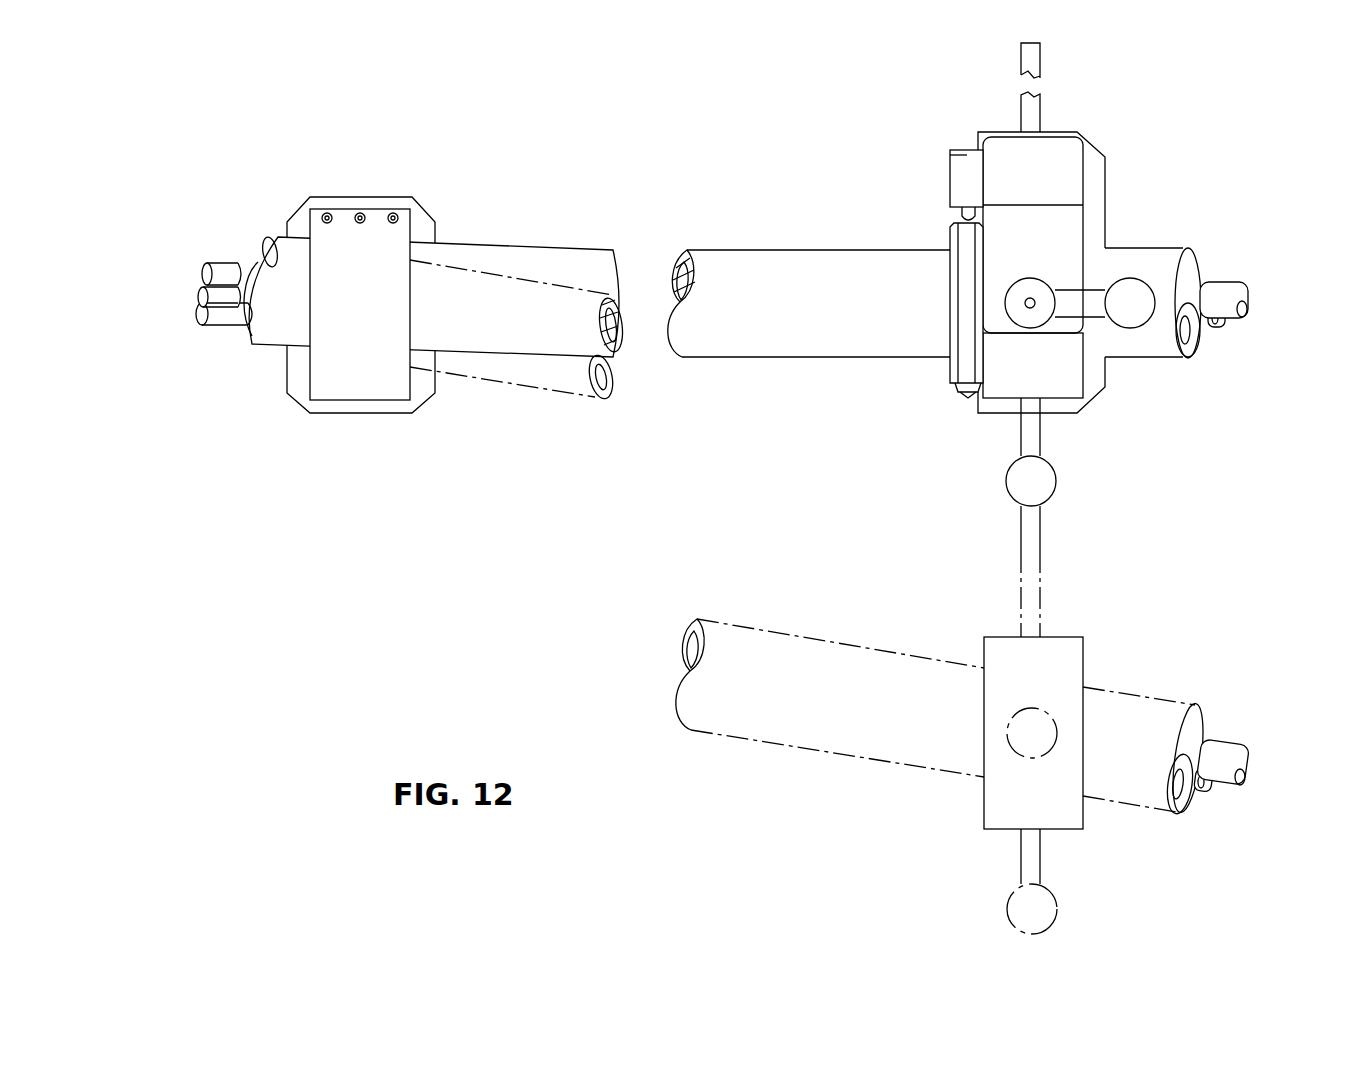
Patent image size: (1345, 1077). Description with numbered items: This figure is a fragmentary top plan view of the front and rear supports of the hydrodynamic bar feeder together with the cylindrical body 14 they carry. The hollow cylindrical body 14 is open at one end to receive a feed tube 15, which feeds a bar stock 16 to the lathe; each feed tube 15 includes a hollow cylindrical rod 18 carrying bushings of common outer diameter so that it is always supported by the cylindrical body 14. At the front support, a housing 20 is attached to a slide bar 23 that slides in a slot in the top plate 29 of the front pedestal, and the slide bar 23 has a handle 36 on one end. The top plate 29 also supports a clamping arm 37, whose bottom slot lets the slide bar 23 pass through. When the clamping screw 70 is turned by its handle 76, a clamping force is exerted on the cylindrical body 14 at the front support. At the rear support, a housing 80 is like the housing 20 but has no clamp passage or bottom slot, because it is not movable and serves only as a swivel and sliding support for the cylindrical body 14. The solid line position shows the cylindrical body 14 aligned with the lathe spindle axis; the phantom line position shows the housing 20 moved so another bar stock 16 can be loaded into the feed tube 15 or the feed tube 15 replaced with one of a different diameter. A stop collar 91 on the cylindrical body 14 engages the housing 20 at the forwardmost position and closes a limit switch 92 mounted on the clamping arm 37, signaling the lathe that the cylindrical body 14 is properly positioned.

The cylindrical body 14 is at (765, 357).
The feed tube 15 is at (1212, 278).
The bar stock 16 is at (1236, 282).
The hollow cylindrical rod 18 is at (1215, 330).
The housing 20 is at (975, 395).
The slide bar 23 is at (1020, 112).
The top plate 29 is at (1019, 296).
The handle 36 is at (1056, 490).
The clamping arm 37 is at (1085, 215).
The clamping screw 70 is at (1050, 283).
The handle 76 is at (1140, 326).
The housing 80 is at (293, 391).
The stop collar 91 is at (948, 230).
The limit switch 92 is at (950, 183).